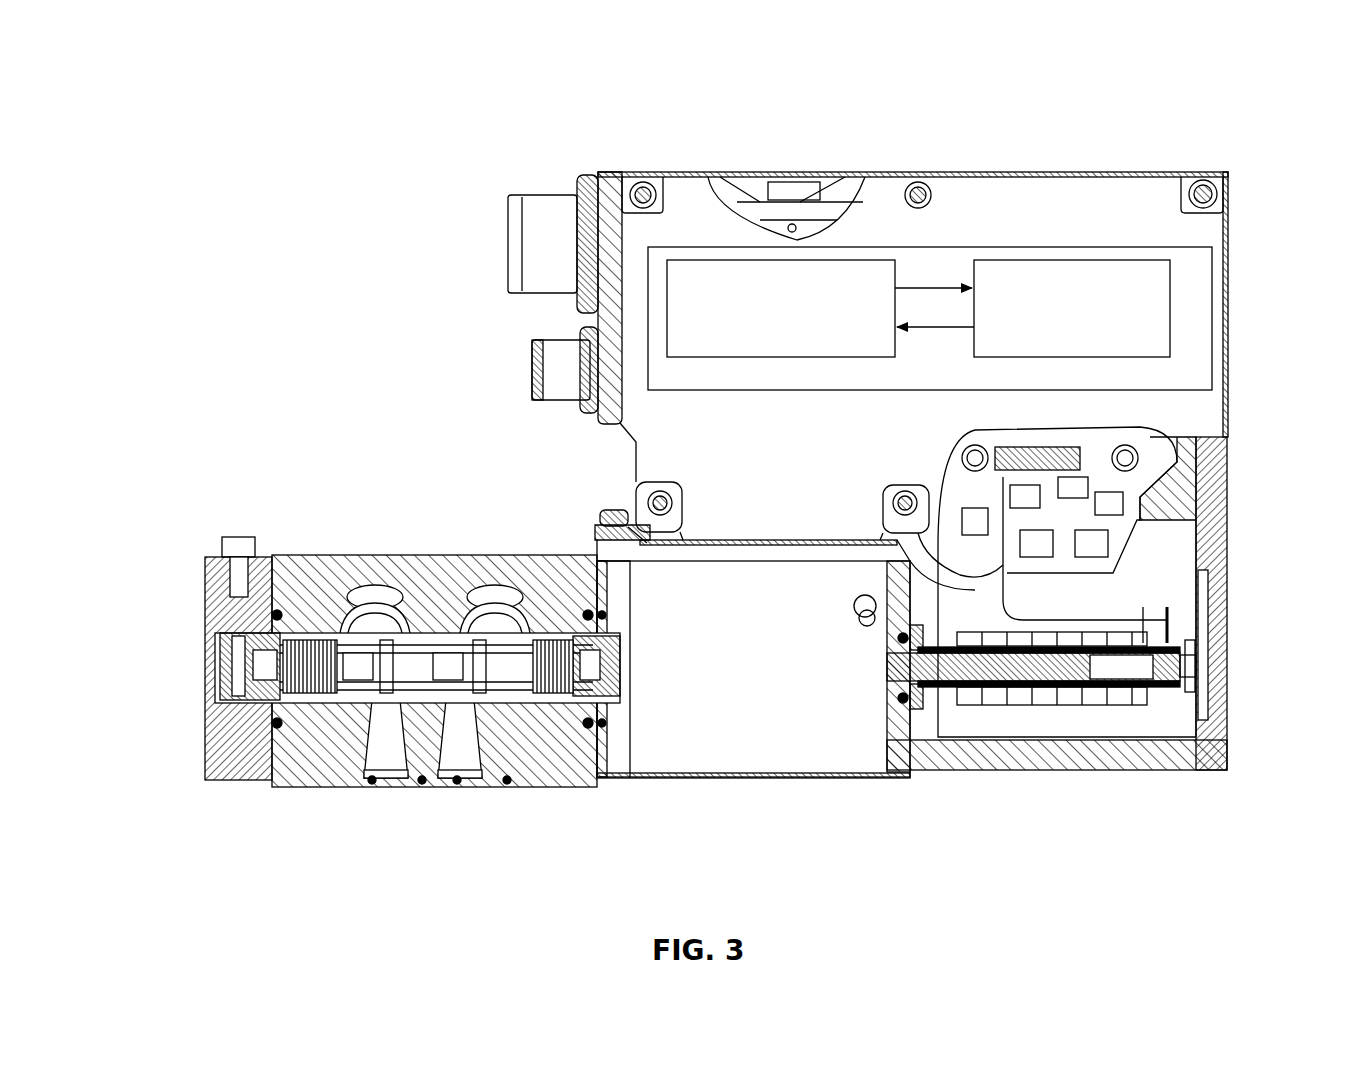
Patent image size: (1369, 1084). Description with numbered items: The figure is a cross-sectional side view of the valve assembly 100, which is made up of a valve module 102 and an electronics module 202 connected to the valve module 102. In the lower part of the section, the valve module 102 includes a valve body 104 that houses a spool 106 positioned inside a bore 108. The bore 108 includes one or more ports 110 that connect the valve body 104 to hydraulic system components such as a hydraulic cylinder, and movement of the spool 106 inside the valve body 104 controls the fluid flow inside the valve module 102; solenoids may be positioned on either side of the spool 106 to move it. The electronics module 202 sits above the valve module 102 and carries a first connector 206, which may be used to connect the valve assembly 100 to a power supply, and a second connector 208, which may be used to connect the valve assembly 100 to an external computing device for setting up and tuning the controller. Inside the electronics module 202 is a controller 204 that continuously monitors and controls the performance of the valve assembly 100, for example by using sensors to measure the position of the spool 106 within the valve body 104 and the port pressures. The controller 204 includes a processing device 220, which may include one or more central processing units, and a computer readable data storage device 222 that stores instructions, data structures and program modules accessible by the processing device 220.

The valve assembly 100 is at (129, 134).
The valve module 102 is at (748, 732).
The valve body 104 is at (512, 555).
The spool 106 is at (455, 640).
The bore 108 is at (350, 640).
The ports 110 is at (377, 700).
The electronics module 202 is at (1047, 212).
The controller 204 is at (1187, 303).
The first connector 206 is at (532, 202).
The second connector 208 is at (530, 366).
The processing device 220 is at (781, 308).
The computer readable data storage device 222 is at (1072, 308).